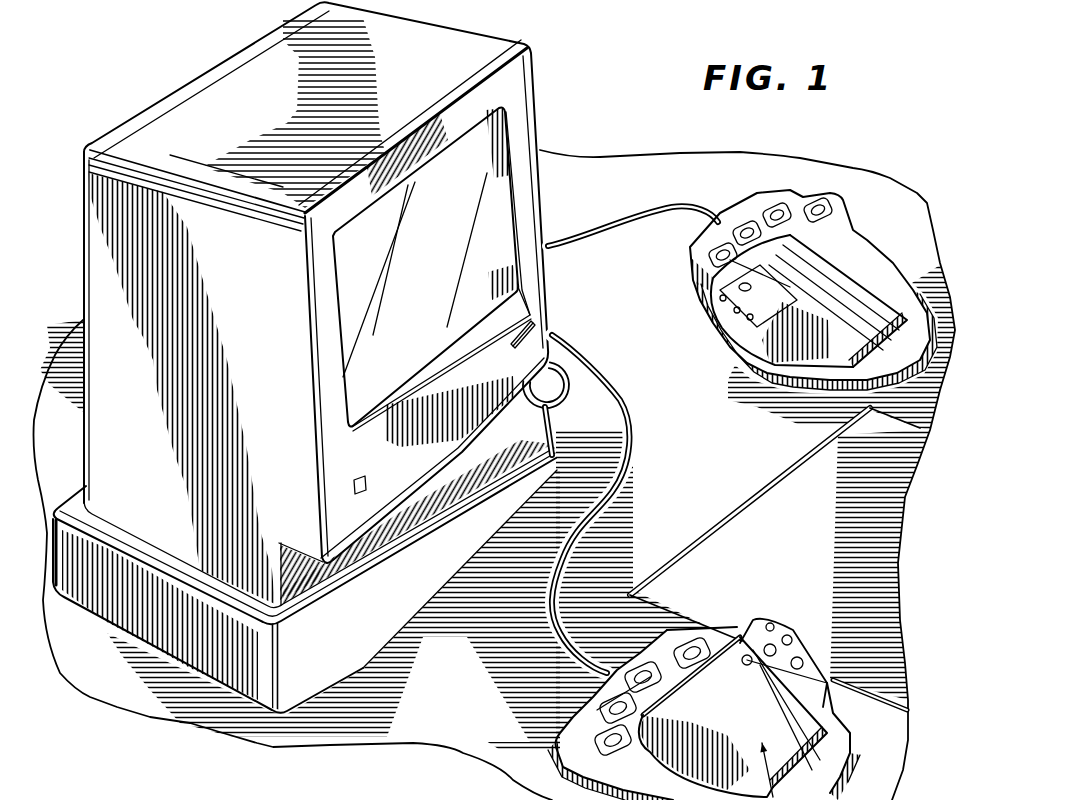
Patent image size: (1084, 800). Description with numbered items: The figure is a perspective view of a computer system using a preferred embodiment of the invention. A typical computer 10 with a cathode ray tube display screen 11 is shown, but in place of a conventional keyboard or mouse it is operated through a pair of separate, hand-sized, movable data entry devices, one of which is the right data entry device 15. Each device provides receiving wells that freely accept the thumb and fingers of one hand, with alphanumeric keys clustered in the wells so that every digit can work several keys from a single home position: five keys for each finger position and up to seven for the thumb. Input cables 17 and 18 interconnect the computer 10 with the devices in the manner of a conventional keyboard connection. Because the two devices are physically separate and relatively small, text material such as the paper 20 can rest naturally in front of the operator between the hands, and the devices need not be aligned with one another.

The computer 10 is at (511, 44).
The cathode ray tube (CRT) display screen 11 is at (440, 256).
The right data entry device 15 is at (846, 280).
The input cable 17 is at (646, 227).
The input cable 18 is at (608, 498).
The paper 20 is at (741, 513).